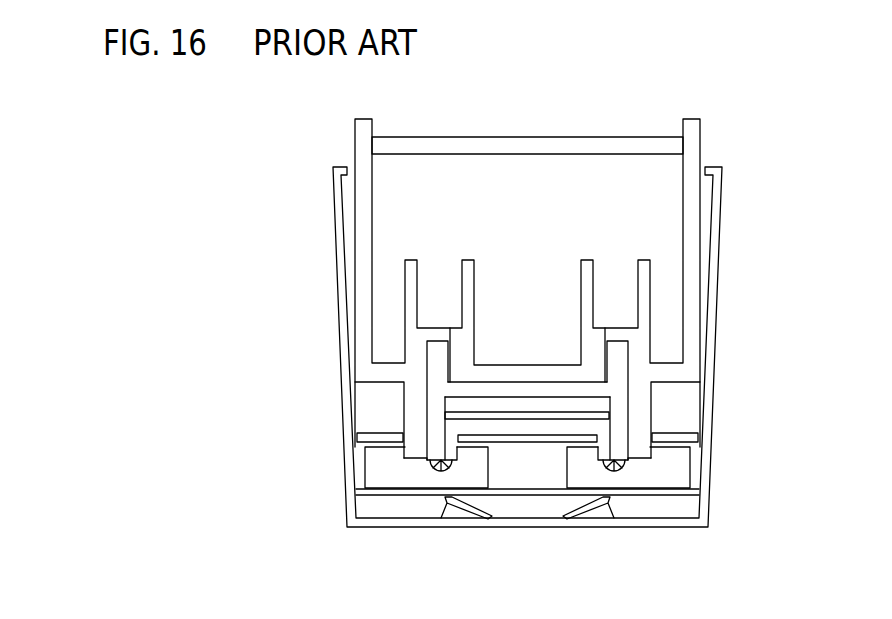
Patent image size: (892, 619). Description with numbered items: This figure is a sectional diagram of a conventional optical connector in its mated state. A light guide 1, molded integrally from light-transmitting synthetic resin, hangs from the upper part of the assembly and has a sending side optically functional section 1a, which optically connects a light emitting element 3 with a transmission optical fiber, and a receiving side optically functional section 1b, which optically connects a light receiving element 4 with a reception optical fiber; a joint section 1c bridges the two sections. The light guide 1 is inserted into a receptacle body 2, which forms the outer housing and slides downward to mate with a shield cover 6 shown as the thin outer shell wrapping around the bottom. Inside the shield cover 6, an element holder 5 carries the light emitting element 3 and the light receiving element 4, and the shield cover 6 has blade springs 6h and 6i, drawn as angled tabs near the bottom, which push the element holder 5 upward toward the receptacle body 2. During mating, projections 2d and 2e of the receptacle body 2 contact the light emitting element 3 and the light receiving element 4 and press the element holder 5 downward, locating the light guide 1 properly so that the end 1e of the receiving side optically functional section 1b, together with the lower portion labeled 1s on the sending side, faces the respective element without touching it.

The light guide 1 is at (524, 381).
The sending side optically functional section 1a is at (612, 352).
The receiving side optically functional section 1b is at (437, 372).
The joint section 1c is at (558, 395).
The end of the receiving side optically functional section 1e is at (410, 459).
The contact soldering portion 1s is at (640, 458).
The receptacle body 2 is at (695, 190).
The projection 2d is at (638, 440).
The projection 2e is at (411, 447).
The light emitting element 3 is at (683, 480).
The light receiving element 4 is at (388, 472).
The element holder 5 is at (526, 473).
The shield cover 6 is at (552, 379).
The blade spring 6h is at (610, 502).
The blade spring 6i is at (445, 502).